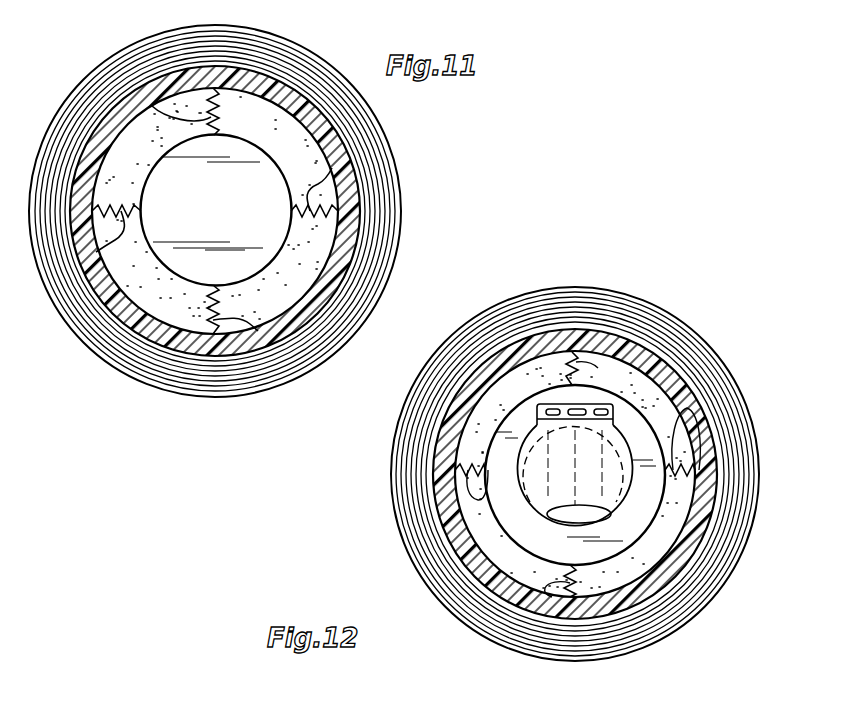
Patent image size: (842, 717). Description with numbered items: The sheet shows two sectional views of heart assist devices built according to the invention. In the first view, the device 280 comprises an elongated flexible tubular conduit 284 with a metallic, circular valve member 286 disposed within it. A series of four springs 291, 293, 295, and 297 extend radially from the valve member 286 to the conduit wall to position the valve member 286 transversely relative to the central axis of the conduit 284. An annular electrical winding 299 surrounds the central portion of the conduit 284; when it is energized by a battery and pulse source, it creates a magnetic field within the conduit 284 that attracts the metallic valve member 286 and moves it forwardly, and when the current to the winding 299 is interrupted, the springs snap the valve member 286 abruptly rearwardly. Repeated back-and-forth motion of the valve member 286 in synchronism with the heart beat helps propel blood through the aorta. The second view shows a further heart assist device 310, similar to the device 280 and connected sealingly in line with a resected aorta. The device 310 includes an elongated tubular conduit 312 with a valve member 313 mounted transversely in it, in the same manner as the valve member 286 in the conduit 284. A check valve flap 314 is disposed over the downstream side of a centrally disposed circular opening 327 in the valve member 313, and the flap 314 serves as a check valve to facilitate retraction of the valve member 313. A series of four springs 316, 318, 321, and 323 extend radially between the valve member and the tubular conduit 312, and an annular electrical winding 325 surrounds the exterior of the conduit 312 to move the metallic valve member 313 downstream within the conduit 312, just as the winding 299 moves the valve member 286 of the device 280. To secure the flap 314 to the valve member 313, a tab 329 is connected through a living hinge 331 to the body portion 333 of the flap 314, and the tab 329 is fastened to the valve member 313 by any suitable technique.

In FIG. 11, the heart assist device 280 is at (197, 404).
In FIG. 11, the tubular conduit 284 is at (320, 127).
In FIG. 11, the valve member 286 is at (224, 216).
In FIG. 11, the spring 291 is at (129, 91).
In FIG. 11, the spring 293 is at (352, 181).
In FIG. 11, the spring 295 is at (260, 333).
In FIG. 11, the spring 297 is at (110, 245).
In FIG. 11, the annular electrical winding 299 is at (262, 52).
In FIG. 12, the heart assist device 310 is at (466, 639).
In FIG. 12, the tubular conduit 312 is at (657, 578).
In FIG. 12, the valve member 313 is at (502, 441).
In FIG. 12, the check valve flap 314 is at (590, 454).
In FIG. 12, the spring 316 is at (588, 415).
In FIG. 12, the spring 318 is at (622, 438).
In FIG. 12, the spring 321 is at (517, 604).
In FIG. 12, the spring 323 is at (468, 490).
In FIG. 12, the annular electrical winding 325 is at (531, 306).
In FIG. 12, the circular opening 327 is at (555, 580).
In FIG. 12, the tab 329 is at (552, 404).
In FIG. 12, the living hinge 331 is at (596, 410).
In FIG. 12, the body portion 333 is at (543, 470).